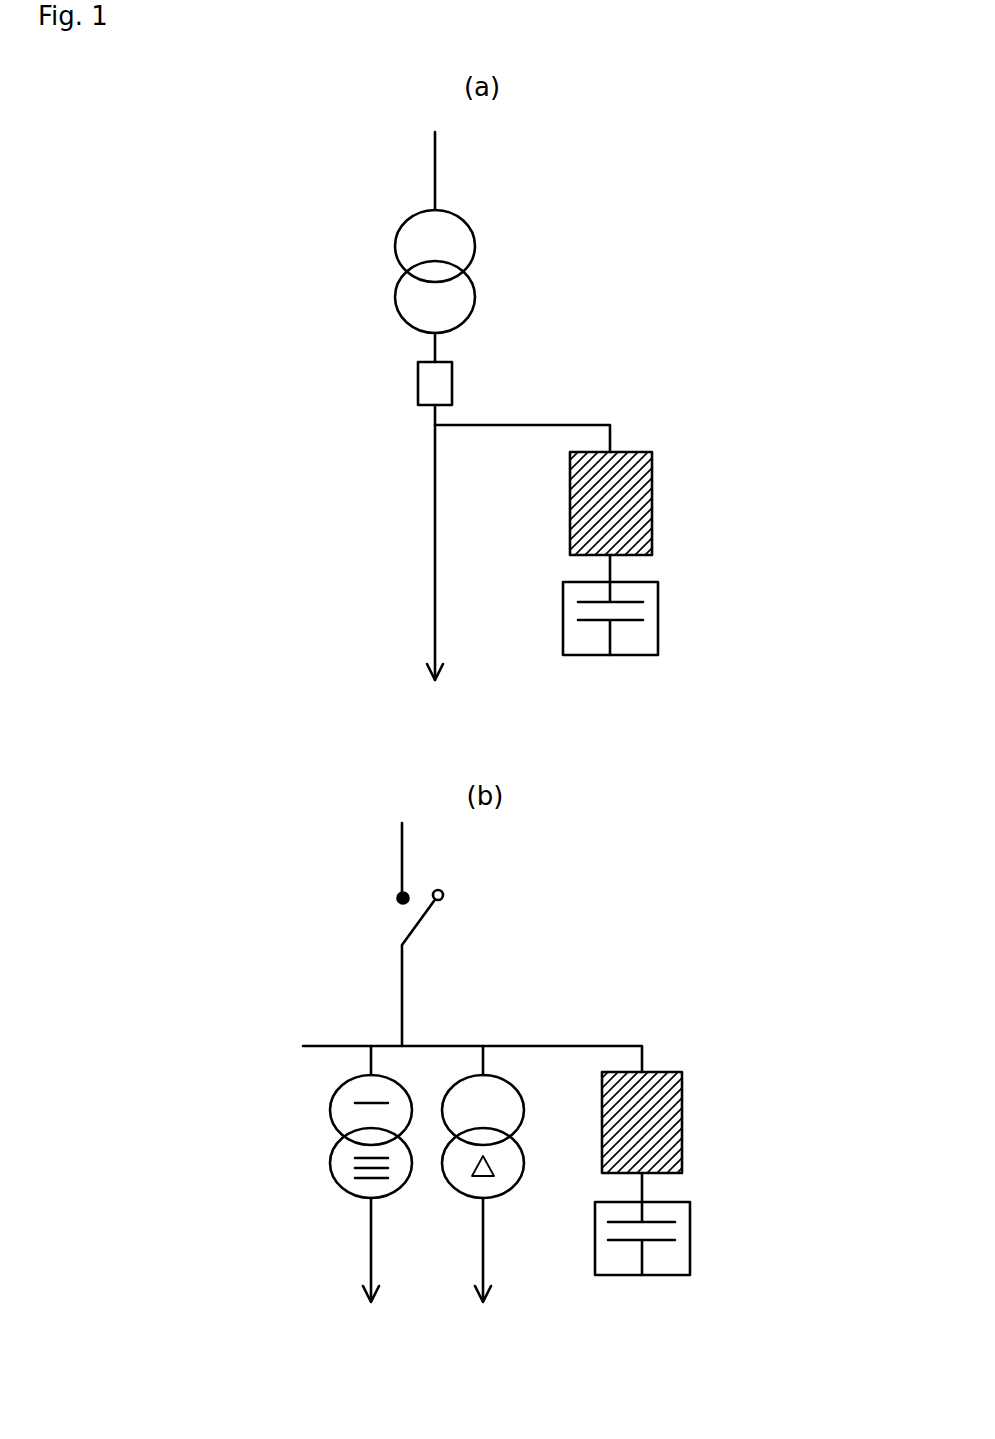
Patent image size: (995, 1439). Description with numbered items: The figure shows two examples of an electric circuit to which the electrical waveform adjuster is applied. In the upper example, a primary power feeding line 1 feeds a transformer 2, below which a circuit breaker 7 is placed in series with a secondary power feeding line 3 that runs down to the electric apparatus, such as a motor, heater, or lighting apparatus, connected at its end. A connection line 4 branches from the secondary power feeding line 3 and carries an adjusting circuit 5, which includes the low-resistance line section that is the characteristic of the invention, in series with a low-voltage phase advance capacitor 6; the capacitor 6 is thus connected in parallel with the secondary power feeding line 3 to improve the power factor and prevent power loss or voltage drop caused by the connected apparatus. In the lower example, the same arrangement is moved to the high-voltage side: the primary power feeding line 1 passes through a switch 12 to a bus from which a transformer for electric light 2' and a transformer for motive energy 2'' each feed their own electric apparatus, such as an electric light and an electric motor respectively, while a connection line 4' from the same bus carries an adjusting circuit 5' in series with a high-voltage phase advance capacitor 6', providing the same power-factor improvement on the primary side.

The primary power feeding line 1 is at (435, 188).
The transformer 2 is at (468, 286).
The secondary power feeding line 3 is at (436, 582).
The connection line 4 is at (533, 394).
The adjusting circuit 5 is at (569, 517).
The low-voltage phase advance capacitor 6 is at (573, 627).
The circuit breaker 7 is at (452, 383).
The switch 12 is at (423, 922).
The transformer for electric light 2' is at (350, 1193).
The transformer for motive energy 2'' is at (502, 1193).
The connection line 4' is at (487, 1027).
The adjusting circuit 5' is at (686, 1137).
The high-voltage phase advance capacitor 6' is at (686, 1227).